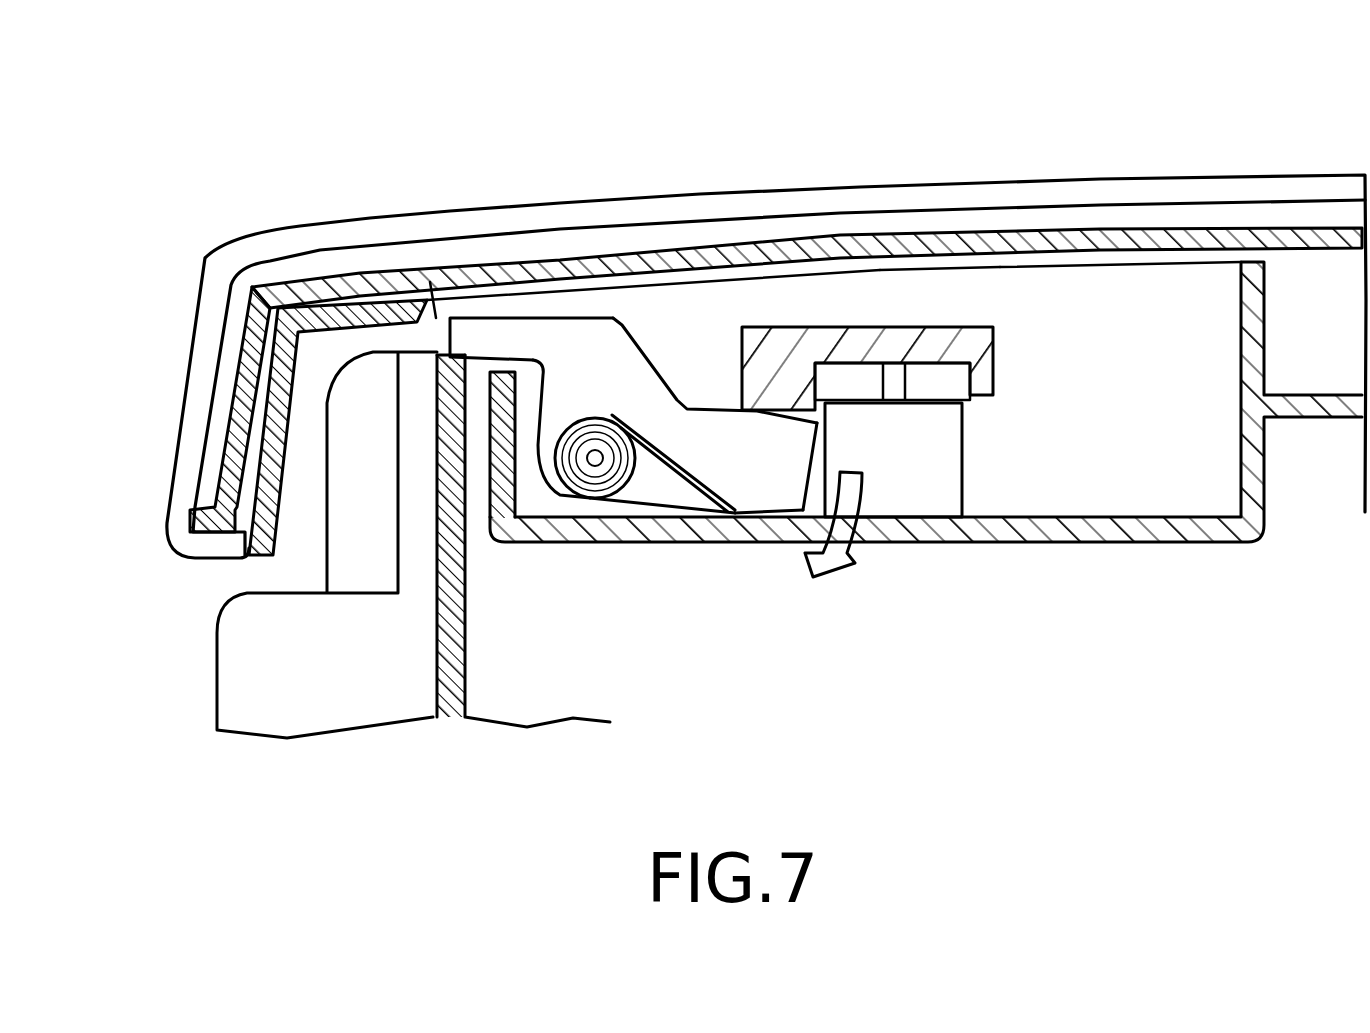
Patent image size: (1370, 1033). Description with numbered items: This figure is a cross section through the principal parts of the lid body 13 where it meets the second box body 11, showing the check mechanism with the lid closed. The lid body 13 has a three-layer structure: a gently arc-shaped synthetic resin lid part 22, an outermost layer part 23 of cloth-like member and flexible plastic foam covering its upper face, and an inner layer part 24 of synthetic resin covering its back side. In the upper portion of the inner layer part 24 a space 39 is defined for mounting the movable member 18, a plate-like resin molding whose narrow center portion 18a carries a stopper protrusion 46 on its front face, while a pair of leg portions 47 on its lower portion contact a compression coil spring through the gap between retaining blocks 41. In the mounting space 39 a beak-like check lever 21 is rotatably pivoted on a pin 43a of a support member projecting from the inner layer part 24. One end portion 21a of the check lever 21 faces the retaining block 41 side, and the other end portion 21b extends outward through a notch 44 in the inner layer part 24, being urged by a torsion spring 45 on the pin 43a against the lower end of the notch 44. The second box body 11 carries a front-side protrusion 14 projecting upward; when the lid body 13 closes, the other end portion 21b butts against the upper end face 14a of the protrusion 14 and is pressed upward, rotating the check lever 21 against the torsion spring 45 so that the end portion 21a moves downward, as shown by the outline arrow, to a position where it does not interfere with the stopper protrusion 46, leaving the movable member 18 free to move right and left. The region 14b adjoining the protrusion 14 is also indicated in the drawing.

The second box body 11 is at (243, 653).
The lid body 13 is at (681, 176).
The protrusion 14 is at (465, 683).
The upper end face of protrusion 14a is at (465, 570).
The bent flange of wall 14b is at (430, 268).
The movable member 18 is at (862, 305).
The center portion of movable member 18a is at (907, 320).
The check lever 21 is at (590, 328).
The one end portion of check lever 21a is at (813, 437).
The other end portion of check lever 21b is at (480, 332).
The lid part 22 is at (1232, 230).
The outermost layer part 23 is at (1018, 178).
The inner layer part 24 is at (1143, 536).
The space for mounting the movable member 39 is at (1158, 280).
The retaining block 41 is at (925, 450).
The pin 43a is at (597, 462).
The notch 44 is at (508, 368).
The torsion spring 45 is at (700, 483).
The stopper protrusion 46 is at (785, 345).
The leg portion 47 is at (897, 385).